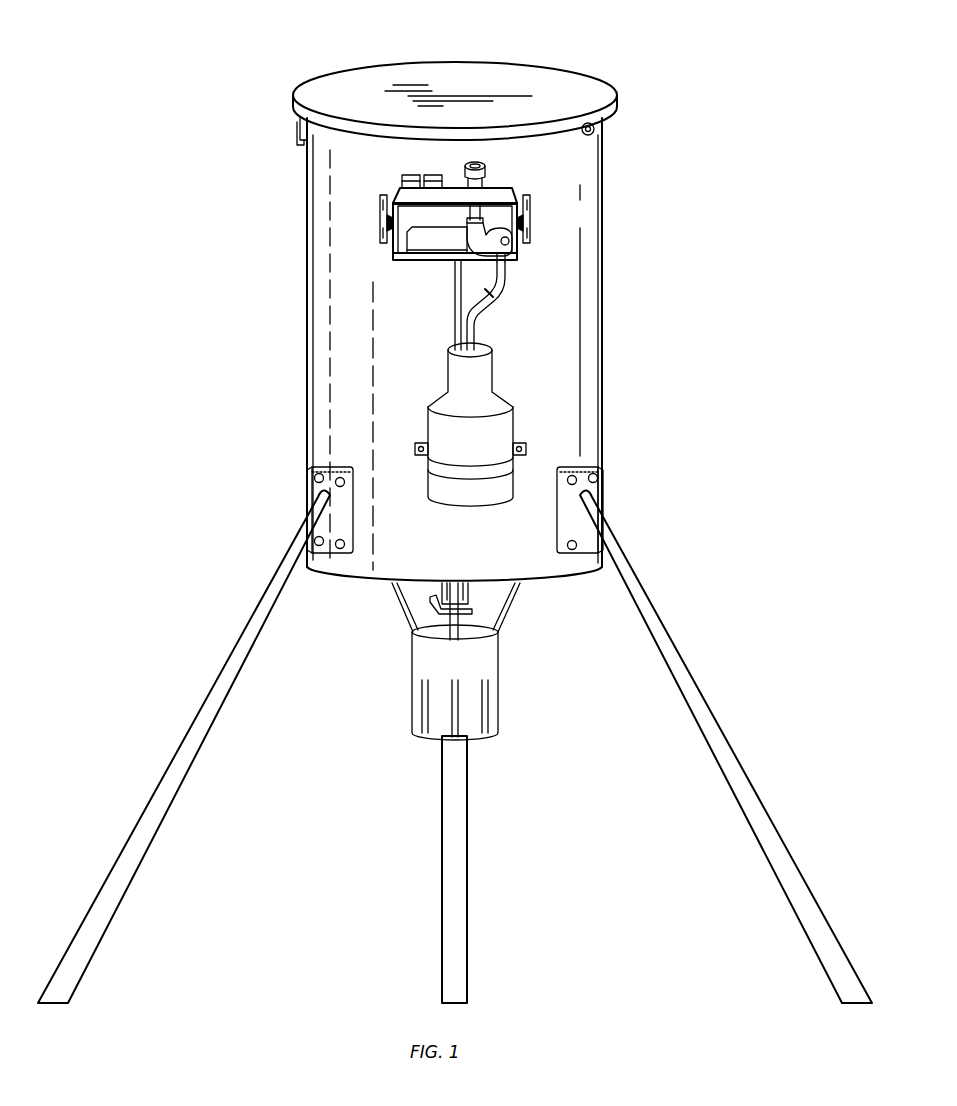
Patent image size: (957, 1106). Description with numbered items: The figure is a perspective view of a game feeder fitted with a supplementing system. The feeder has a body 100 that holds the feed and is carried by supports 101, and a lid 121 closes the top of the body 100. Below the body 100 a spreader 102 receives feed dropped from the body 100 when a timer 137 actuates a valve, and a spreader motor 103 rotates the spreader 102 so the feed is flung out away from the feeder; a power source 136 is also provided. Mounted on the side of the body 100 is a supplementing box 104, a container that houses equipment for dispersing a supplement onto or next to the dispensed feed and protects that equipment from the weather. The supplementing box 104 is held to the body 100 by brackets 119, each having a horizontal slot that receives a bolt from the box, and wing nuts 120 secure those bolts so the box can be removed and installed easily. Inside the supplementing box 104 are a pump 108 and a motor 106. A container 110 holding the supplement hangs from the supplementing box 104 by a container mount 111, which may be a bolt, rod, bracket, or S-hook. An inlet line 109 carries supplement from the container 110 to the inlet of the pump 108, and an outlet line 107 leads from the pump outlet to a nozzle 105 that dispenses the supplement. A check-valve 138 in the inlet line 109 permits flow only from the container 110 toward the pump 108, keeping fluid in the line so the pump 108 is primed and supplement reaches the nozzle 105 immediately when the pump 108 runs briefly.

The body 100 is at (606, 248).
The supports 101 is at (260, 606).
The spreader 102 is at (472, 610).
The spreader motor 103 is at (497, 672).
The supplementing box 104 is at (392, 257).
The nozzle 105 is at (485, 170).
The motor 106 is at (442, 245).
The outlet line 107 is at (470, 211).
The pump 108 is at (508, 244).
The inlet line 109 is at (506, 262).
The container 110 is at (493, 365).
The container mount 111 is at (456, 303).
The brackets 119 is at (382, 197).
The wing nuts 120 is at (385, 222).
The lid 121 is at (576, 90).
The power source 136 is at (411, 176).
The timer 137 is at (436, 176).
The check-valve 138 is at (489, 287).